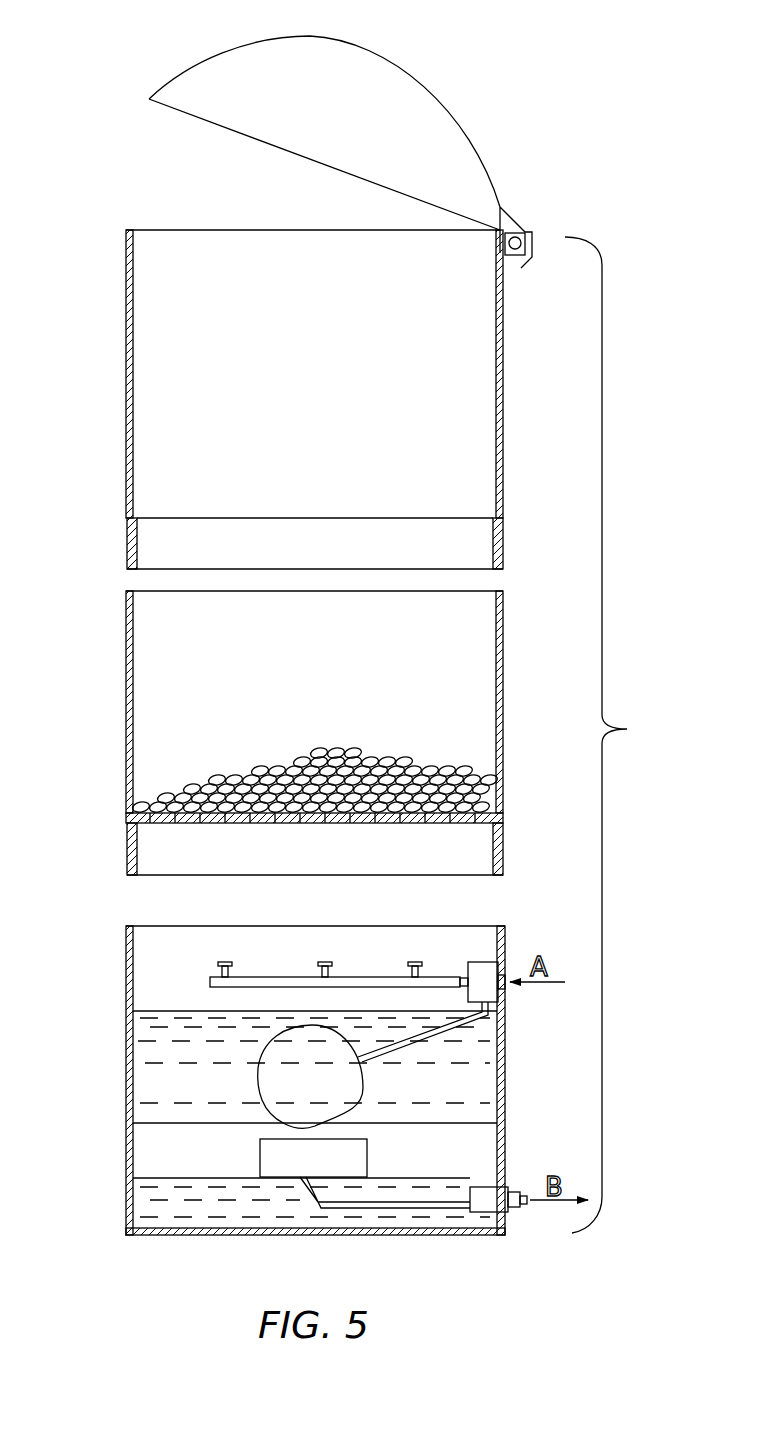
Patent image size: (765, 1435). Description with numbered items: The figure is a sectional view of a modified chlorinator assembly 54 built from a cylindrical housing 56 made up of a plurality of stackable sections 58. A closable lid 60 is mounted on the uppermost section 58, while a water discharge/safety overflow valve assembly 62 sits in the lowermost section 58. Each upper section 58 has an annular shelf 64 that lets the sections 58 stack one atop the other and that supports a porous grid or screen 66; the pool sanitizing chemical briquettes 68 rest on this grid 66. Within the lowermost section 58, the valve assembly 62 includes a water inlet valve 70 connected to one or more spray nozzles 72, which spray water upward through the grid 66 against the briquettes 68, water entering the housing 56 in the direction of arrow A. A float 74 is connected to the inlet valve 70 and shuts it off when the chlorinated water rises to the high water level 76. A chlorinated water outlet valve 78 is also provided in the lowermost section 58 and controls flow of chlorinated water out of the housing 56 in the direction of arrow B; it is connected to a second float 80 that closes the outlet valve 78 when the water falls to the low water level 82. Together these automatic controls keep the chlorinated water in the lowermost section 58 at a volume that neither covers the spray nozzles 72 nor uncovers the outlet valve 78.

The chlorinator assembly 54 is at (80, 411).
The cylindrical housing 56 is at (618, 735).
The stackable section 58 is at (126, 292).
The closable lid 60 is at (258, 50).
The water discharge/safety overflow valve assembly 62 is at (245, 1077).
The annular shelf 64 is at (492, 540).
The porous grid or screen 66 is at (207, 823).
The pool sanitizing chemical briquettes 68 is at (330, 757).
The water inlet valve 70 is at (487, 992).
The spray nozzles 72 is at (325, 962).
The float 74 is at (326, 1093).
The high water level point 76 is at (172, 1010).
The chlorinated water outlet valve 78 is at (492, 1198).
The float 80 is at (287, 1177).
The low water level point 82 is at (175, 1188).